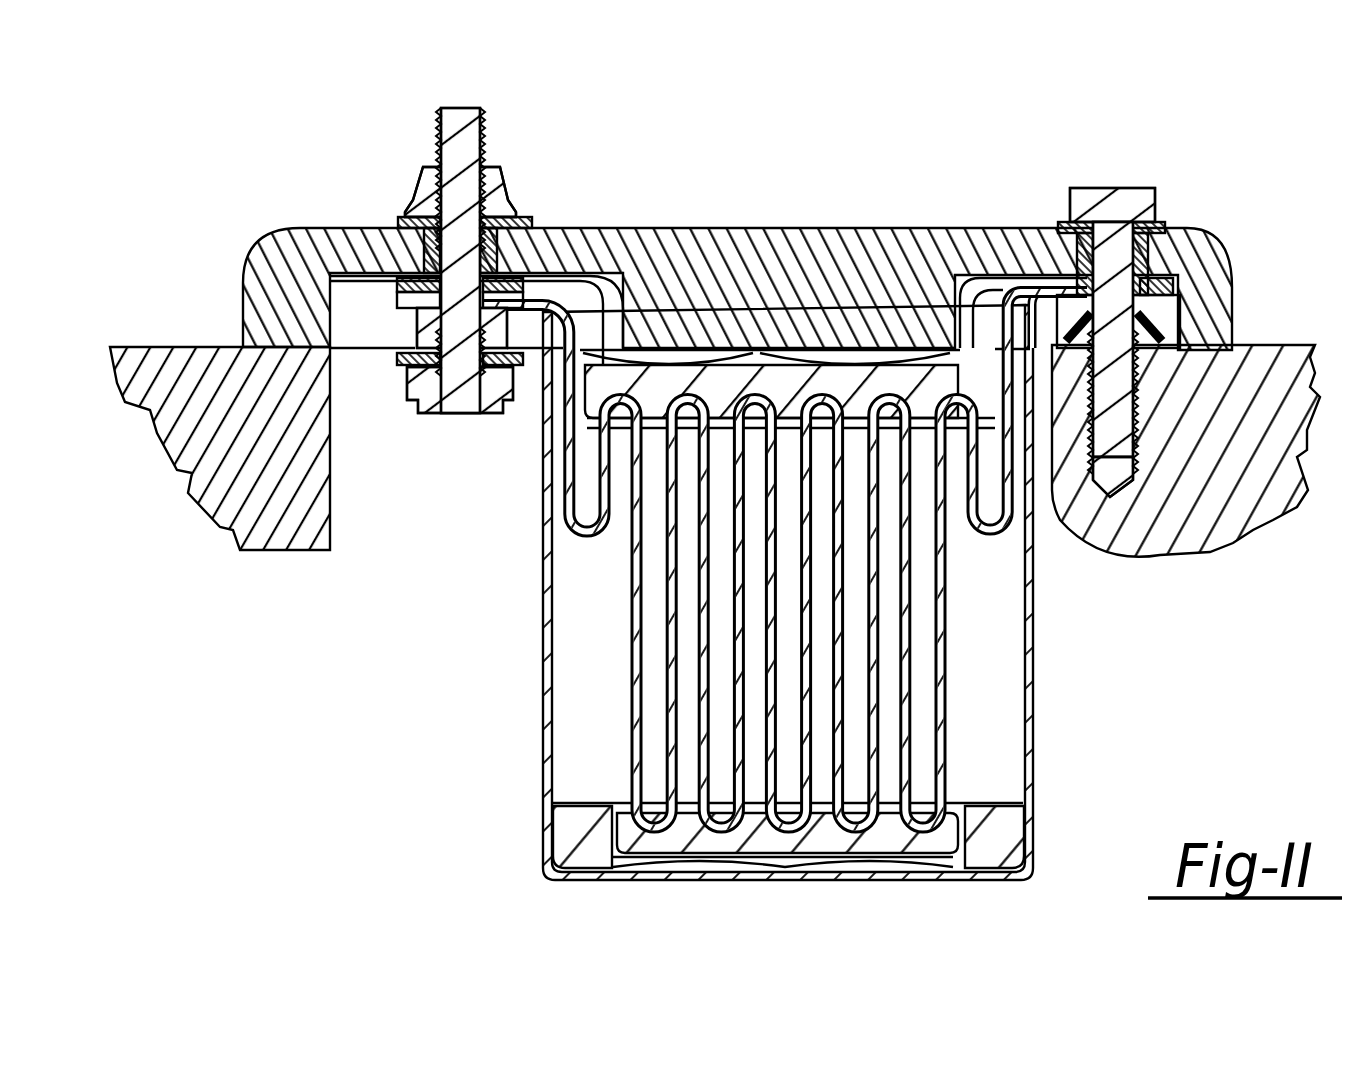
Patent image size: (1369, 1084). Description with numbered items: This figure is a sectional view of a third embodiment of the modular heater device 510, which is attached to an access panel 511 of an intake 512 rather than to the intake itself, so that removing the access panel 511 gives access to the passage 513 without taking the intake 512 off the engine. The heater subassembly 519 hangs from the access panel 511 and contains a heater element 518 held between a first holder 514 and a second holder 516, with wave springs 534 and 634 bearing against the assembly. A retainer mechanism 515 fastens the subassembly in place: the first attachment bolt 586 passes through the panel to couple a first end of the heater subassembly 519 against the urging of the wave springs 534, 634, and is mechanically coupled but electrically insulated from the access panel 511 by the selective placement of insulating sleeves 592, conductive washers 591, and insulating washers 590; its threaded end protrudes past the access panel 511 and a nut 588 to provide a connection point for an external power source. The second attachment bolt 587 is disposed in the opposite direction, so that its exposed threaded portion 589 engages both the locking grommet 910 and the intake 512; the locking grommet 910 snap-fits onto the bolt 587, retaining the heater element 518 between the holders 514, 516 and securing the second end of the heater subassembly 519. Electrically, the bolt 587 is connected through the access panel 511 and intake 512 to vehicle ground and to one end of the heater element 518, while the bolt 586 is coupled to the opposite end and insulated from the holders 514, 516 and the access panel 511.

The modular heater device 510 is at (255, 218).
The access panel 511 is at (258, 258).
The intake 512 is at (190, 468).
The passage 513 is at (405, 562).
The first holder 514 is at (947, 322).
The retainer mechanism 515 is at (497, 120).
The second holder 516 is at (540, 768).
The heater element 518 is at (630, 643).
The heater subassembly 519 is at (1050, 690).
The wave spring 534 is at (752, 360).
The first attachment bolt 586 is at (457, 397).
The second attachment bolt 587 is at (1123, 372).
The nut 588 is at (432, 178).
The exposed threaded portion 589 is at (1120, 443).
The insulating washer 590 is at (505, 218).
The conductive washer 591 is at (413, 312).
The insulating sleeve 592 is at (522, 250).
The wave spring 634 is at (740, 870).
The locking grommet 910 is at (1158, 337).